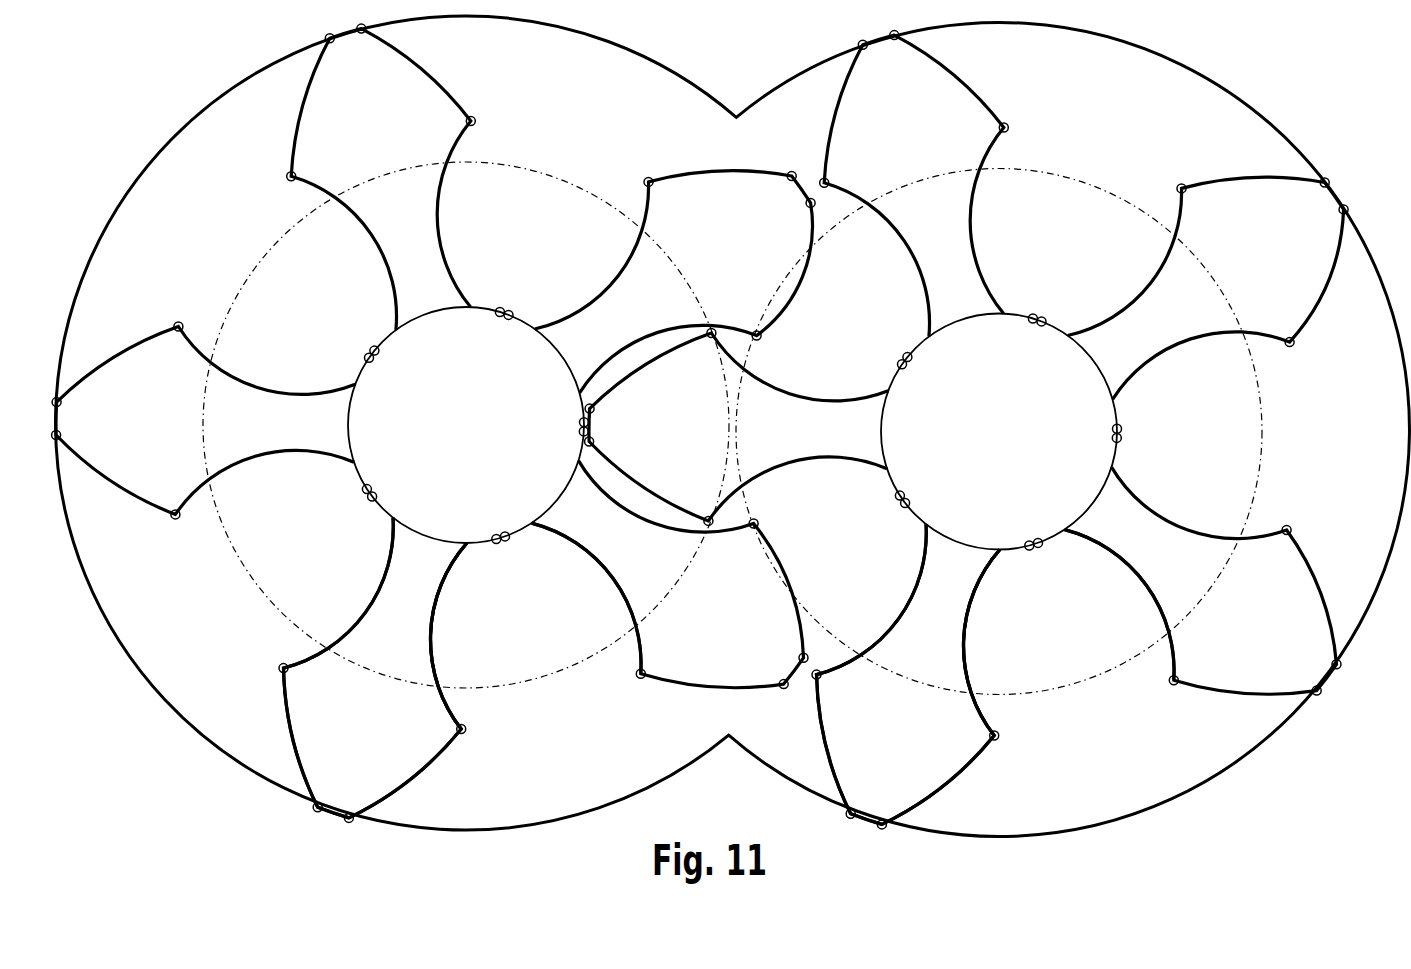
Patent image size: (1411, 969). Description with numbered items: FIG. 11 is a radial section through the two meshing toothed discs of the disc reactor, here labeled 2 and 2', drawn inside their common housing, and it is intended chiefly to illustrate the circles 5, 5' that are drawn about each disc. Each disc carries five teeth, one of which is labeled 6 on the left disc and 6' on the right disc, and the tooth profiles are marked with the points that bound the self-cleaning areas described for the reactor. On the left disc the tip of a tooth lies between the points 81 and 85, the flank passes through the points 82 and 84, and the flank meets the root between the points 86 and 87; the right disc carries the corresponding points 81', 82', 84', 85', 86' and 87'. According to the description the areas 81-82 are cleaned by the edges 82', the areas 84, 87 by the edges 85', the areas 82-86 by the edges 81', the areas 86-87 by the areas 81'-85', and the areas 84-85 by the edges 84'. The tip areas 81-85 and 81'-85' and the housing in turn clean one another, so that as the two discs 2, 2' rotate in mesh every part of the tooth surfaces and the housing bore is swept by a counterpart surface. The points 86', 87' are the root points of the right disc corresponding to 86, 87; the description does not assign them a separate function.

The rotor 2 is at (434, 423).
The mating rotor 2' is at (966, 429).
The circle 5 is at (535, 646).
The circle 5' is at (1068, 652).
The tooth (lobe) 6 is at (384, 668).
The tooth (lobe) of mating rotor 6' is at (914, 674).
The area 81 is at (75, 439).
The edge 81' is at (1354, 664).
The area 82 is at (176, 529).
The edge 82' is at (1285, 516).
The area 84 is at (179, 318).
The edge 84' is at (1166, 691).
The area 85 is at (74, 406).
The edge 85' is at (1333, 696).
The area 86 is at (352, 487).
The root point of mating rotor 86' is at (1130, 446).
The area 87 is at (369, 510).
The root point of mating rotor 87' is at (1132, 420).